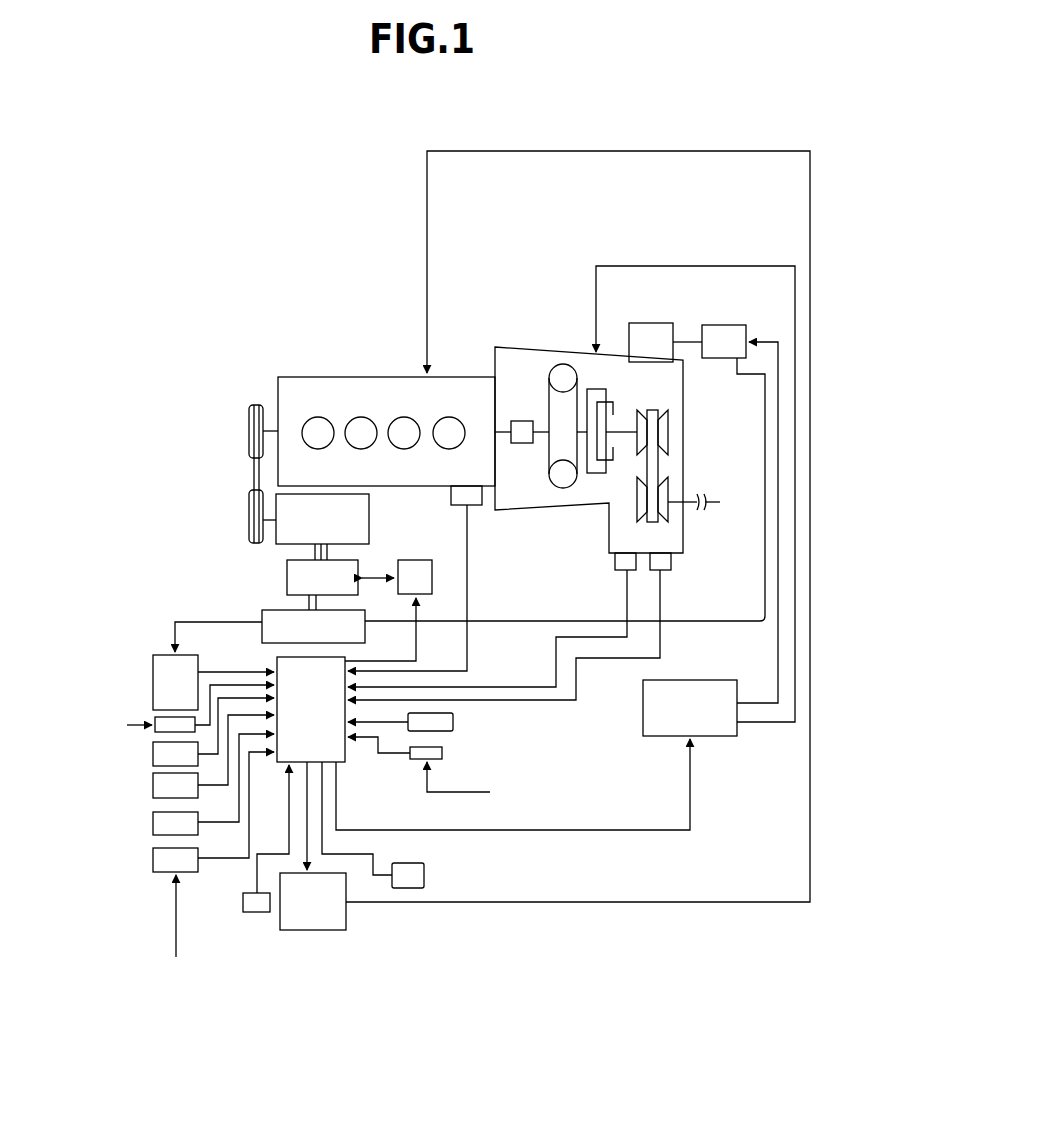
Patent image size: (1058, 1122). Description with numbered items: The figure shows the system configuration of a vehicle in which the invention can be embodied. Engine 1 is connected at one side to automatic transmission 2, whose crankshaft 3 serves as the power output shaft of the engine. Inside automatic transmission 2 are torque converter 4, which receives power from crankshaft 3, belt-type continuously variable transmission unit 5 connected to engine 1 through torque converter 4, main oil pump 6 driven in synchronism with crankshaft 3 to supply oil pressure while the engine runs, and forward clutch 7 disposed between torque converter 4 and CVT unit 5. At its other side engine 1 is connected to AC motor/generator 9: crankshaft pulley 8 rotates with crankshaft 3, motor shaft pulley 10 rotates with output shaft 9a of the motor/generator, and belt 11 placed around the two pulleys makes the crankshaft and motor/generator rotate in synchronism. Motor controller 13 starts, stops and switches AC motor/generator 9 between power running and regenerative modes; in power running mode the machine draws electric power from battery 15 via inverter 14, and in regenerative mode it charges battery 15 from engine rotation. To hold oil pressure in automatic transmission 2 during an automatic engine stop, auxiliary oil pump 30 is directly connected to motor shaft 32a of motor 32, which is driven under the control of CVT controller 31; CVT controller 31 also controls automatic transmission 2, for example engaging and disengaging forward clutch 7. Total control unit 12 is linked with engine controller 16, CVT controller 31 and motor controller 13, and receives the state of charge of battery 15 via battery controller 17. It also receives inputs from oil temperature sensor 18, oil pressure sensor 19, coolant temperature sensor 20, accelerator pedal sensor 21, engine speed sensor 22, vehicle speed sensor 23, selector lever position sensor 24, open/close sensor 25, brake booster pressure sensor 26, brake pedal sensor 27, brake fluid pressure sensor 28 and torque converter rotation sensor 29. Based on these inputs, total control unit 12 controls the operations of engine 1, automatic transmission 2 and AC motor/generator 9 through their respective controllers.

The engine 1 is at (342, 372).
The automatic transmission 2 is at (458, 257).
The crankshaft 3 is at (272, 428).
The torque converter 4 is at (553, 364).
The belt-type continuously variable transmission unit 5 is at (650, 408).
The main oil pump 6 is at (515, 421).
The forward clutch 7 is at (595, 388).
The crankshaft pulley 8 is at (249, 410).
The AC motor/generator 9 is at (288, 546).
The output shaft 9a is at (272, 506).
The motor shaft pulley 10 is at (249, 512).
The belt 11 is at (254, 460).
The total control unit 12 is at (277, 661).
The motor controller 13 is at (417, 560).
The inverter 14 is at (287, 582).
The battery 15 is at (262, 618).
The engine controller 16 is at (313, 931).
The battery controller 17 is at (153, 667).
The oil temperature sensor 18 is at (671, 565).
The oil pressure sensor 19 is at (615, 565).
The coolant temperature sensor 20 is at (451, 497).
The accelerator pedal sensor 21 is at (153, 785).
The engine speed sensor 22 is at (155, 720).
The vehicle speed sensor 23 is at (153, 820).
The selector lever position sensor 24 is at (442, 753).
The open/close sensor 25 is at (424, 876).
The brake booster pressure sensor 26 is at (453, 722).
The brake pedal sensor 27 is at (153, 755).
The brake fluid pressure sensor 28 is at (260, 913).
The torque converter rotation sensor 29 is at (153, 862).
The auxiliary oil pump 30 is at (658, 323).
The CVT controller 31 is at (720, 740).
The motor 32 is at (738, 325).
The motor shaft 32a is at (690, 345).